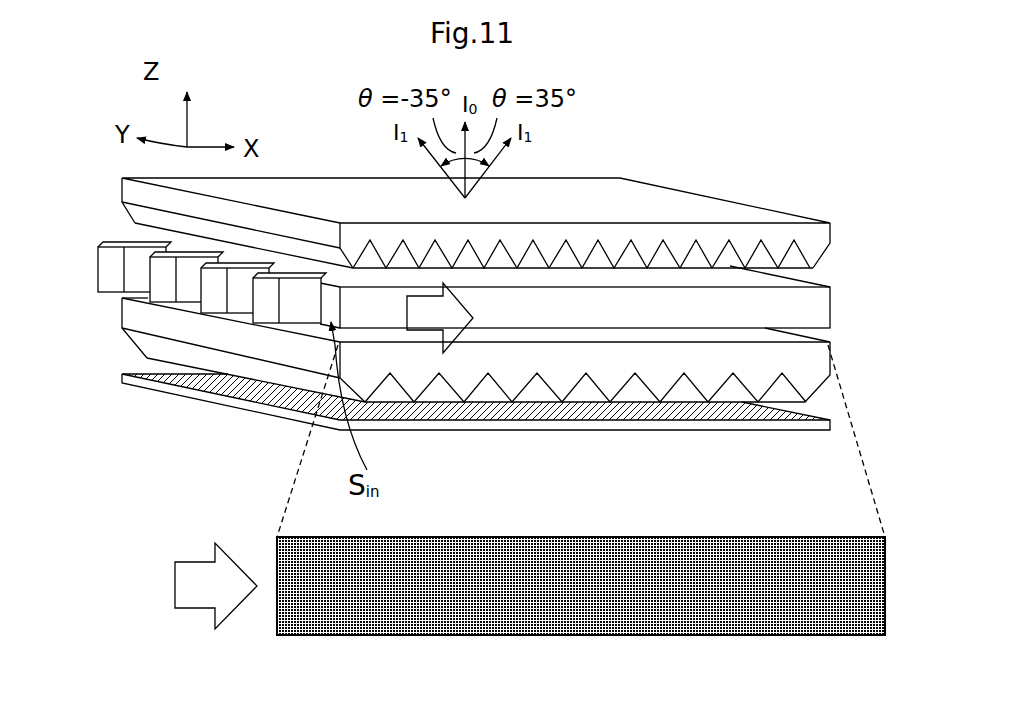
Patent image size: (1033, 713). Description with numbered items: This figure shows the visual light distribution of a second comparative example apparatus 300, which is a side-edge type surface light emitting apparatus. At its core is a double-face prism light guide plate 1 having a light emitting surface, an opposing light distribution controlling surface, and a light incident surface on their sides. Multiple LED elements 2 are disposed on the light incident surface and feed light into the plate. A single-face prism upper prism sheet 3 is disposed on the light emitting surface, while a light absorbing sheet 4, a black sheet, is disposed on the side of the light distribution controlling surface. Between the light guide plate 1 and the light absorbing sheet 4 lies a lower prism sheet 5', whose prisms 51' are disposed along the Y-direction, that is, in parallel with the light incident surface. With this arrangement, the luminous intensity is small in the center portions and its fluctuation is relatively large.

The second comparative example apparatus 300 is at (678, 163).
The upper prism sheet 3 is at (832, 224).
The light guide plate 1 is at (832, 300).
The lower prism sheet 5' is at (510, 391).
The prisms 51' is at (585, 428).
The light absorbing sheet 4 is at (832, 424).
The LED elements 2 is at (263, 300).